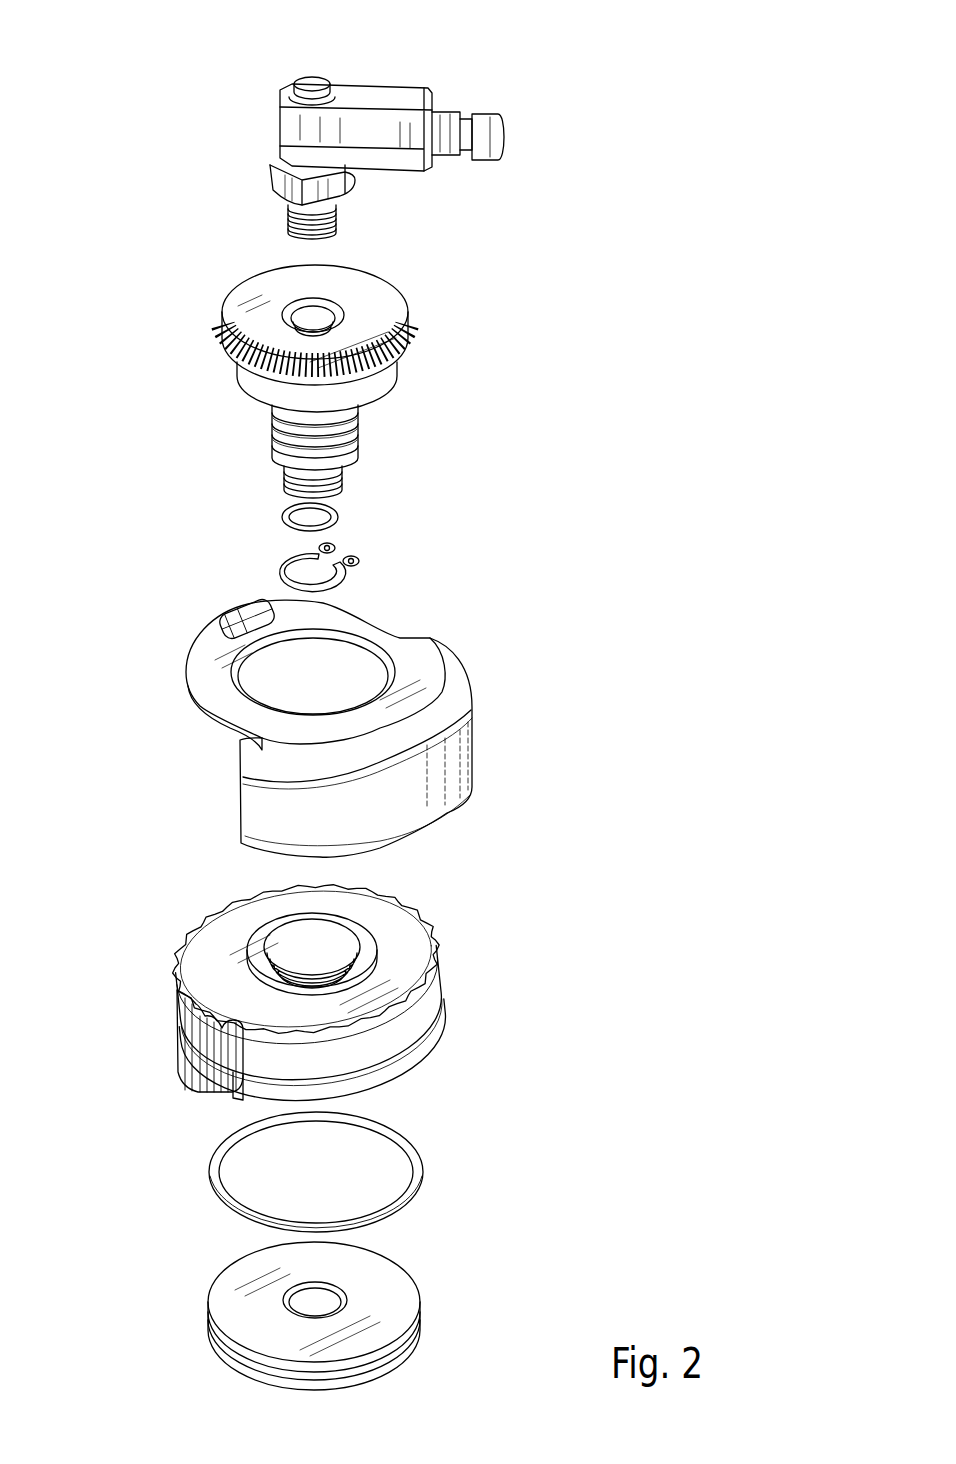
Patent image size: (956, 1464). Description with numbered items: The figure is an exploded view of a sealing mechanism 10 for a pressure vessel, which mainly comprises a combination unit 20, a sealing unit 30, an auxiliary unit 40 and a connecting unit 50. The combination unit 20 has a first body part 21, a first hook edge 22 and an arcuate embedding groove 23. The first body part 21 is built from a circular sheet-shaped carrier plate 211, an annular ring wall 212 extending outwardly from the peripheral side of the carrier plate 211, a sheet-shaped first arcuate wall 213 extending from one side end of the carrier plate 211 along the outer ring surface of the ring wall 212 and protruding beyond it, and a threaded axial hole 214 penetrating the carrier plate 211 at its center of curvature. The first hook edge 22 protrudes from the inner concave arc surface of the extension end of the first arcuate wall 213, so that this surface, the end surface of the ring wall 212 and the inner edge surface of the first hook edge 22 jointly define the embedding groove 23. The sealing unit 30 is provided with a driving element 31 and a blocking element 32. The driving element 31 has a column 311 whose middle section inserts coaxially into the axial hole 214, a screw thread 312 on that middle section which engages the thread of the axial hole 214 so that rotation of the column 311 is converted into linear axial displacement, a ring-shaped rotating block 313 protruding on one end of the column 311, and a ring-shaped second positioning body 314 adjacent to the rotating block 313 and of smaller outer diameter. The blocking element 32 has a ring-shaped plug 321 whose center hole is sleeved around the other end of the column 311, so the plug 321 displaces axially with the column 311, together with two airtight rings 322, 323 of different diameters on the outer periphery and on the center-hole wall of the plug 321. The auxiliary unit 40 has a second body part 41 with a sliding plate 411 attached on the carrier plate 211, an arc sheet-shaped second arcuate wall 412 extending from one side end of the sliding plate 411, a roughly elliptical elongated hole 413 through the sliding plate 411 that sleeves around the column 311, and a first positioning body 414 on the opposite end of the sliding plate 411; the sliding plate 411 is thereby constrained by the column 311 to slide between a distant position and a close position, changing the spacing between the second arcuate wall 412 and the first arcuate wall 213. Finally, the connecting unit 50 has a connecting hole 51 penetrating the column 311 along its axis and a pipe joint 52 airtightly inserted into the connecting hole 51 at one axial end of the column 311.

The sealing mechanism 10 is at (670, 1289).
The combination unit 20 is at (490, 973).
The first body part 21 is at (442, 937).
The carrier plate 211 is at (380, 920).
The ring wall 212 is at (425, 1033).
The first arcuate wall 213 is at (187, 1028).
The axial hole 214 is at (282, 922).
The first hook edge 22 is at (242, 1093).
The embedding groove 23 is at (393, 1094).
The sealing unit 30 is at (457, 331).
The driving element 31 is at (407, 290).
The column 311 is at (268, 437).
The screw thread 312 is at (357, 440).
The rotating block 313 is at (227, 333).
The second positioning body 314 is at (257, 385).
The blocking element 32 is at (200, 1328).
The plug 321 is at (397, 1278).
The airtight ring 322 is at (223, 1197).
The airtight ring 323 is at (343, 510).
The auxiliary unit 40 is at (512, 715).
The second body part 41 is at (188, 645).
The sliding plate 411 is at (420, 667).
The second arcuate wall 412 is at (451, 759).
The elongated hole 413 is at (345, 600).
The first positioning body 414 is at (250, 608).
The connecting unit 50 is at (262, 105).
The connecting hole 51 is at (322, 300).
The pipe joint 52 is at (387, 100).